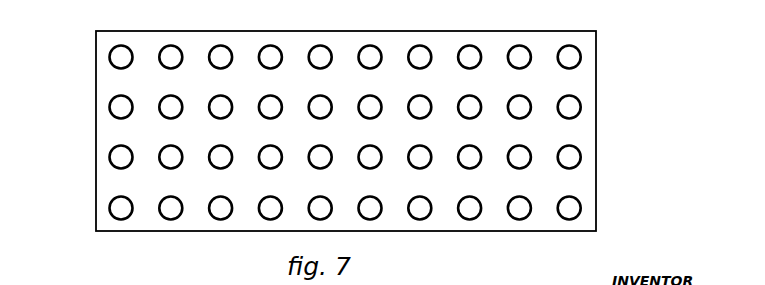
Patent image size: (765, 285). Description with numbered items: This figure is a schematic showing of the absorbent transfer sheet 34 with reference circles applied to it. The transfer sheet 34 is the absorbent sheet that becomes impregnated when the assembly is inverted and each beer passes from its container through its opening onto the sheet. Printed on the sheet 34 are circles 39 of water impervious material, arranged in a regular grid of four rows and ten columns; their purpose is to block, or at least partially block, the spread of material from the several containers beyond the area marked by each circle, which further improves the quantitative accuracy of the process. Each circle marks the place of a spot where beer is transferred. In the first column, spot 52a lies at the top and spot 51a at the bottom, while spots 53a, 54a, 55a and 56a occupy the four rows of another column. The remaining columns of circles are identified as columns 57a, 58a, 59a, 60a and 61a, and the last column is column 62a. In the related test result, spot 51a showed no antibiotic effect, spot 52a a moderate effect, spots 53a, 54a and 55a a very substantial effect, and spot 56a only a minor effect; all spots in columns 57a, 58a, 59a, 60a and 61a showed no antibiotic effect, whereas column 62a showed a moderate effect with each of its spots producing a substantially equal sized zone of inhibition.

The absorbent transfer sheet 34 is at (590, 117).
The circles 39 is at (173, 46).
The spot 51a is at (117, 204).
The spot 52a is at (117, 53).
The spot 53a is at (275, 50).
The spot 54a is at (277, 102).
The spot 55a is at (277, 152).
The spot 56a is at (277, 203).
The column 57a is at (325, 50).
The column 58a is at (375, 50).
The column 59a is at (424, 50).
The column 60a is at (474, 50).
The column 61a is at (524, 50).
The column 62a is at (573, 50).